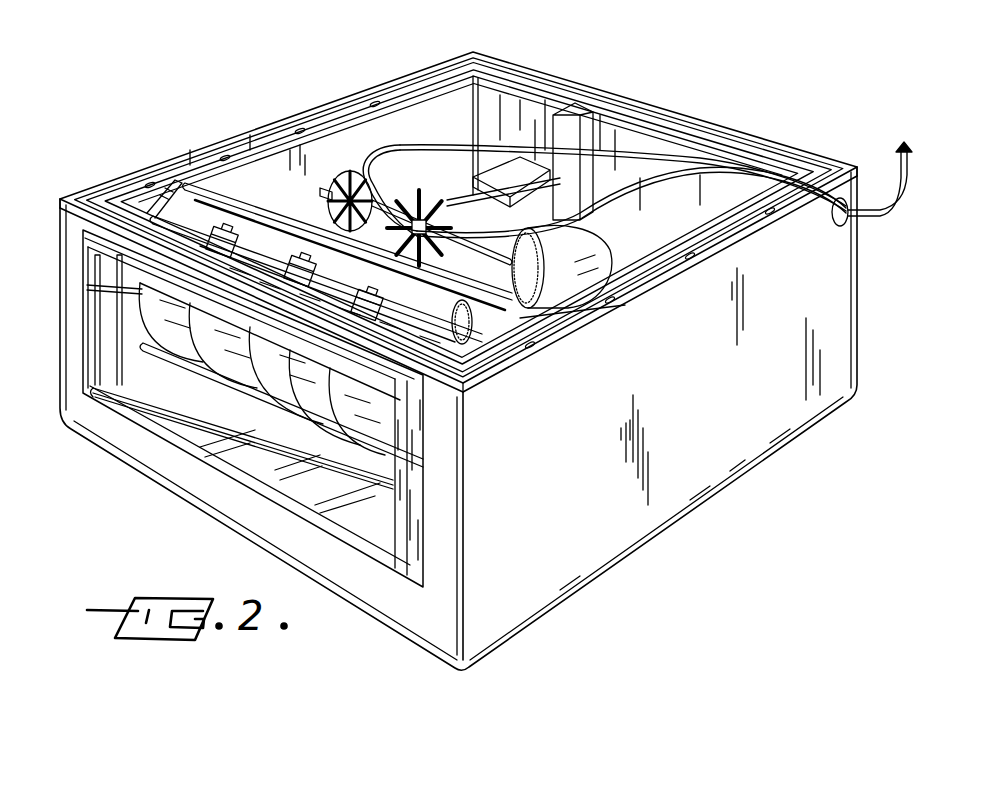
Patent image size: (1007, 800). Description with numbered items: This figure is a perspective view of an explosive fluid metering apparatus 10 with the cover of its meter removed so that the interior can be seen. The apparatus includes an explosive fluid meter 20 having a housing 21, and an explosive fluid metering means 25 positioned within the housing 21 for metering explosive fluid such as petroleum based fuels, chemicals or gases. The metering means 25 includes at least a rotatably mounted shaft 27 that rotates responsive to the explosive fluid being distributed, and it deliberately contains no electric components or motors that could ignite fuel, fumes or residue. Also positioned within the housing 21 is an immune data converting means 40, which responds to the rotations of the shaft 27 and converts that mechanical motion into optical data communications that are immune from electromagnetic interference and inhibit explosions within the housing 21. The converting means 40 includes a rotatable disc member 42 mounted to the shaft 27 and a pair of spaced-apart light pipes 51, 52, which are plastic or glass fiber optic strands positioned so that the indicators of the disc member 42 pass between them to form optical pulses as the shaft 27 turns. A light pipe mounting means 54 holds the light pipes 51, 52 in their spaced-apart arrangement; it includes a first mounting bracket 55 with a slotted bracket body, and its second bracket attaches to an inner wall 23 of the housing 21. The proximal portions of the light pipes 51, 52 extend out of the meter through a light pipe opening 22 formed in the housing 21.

The explosive fluid metering apparatus 10 is at (192, 104).
The explosive fluid meter 20 is at (523, 560).
The housing 21 is at (712, 480).
The light pipe opening 22 is at (855, 222).
The inner wall 23 is at (445, 143).
The explosive fluid metering means 25 is at (292, 193).
The rotatably mounted shaft 27 is at (495, 255).
The immune data converting means 40 is at (397, 136).
The rotatable disc member 42 is at (419, 214).
The light pipe 51 is at (703, 167).
The light pipe 52 is at (663, 148).
The light pipe mounting means 54 is at (537, 128).
The first mounting bracket 55 is at (666, 795).